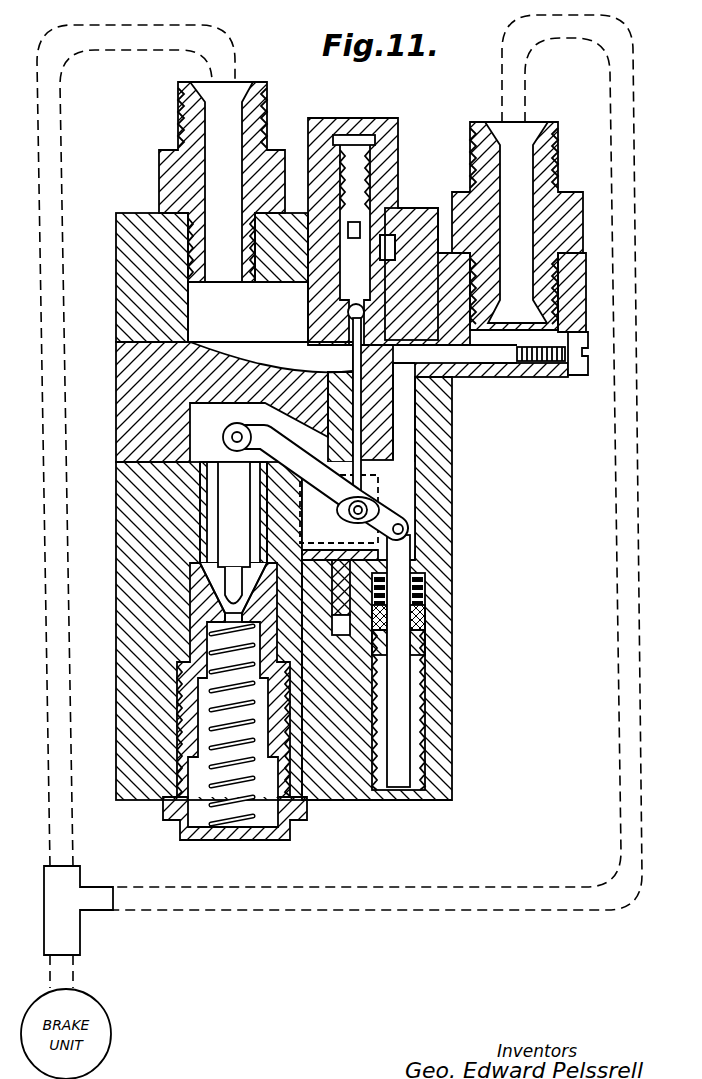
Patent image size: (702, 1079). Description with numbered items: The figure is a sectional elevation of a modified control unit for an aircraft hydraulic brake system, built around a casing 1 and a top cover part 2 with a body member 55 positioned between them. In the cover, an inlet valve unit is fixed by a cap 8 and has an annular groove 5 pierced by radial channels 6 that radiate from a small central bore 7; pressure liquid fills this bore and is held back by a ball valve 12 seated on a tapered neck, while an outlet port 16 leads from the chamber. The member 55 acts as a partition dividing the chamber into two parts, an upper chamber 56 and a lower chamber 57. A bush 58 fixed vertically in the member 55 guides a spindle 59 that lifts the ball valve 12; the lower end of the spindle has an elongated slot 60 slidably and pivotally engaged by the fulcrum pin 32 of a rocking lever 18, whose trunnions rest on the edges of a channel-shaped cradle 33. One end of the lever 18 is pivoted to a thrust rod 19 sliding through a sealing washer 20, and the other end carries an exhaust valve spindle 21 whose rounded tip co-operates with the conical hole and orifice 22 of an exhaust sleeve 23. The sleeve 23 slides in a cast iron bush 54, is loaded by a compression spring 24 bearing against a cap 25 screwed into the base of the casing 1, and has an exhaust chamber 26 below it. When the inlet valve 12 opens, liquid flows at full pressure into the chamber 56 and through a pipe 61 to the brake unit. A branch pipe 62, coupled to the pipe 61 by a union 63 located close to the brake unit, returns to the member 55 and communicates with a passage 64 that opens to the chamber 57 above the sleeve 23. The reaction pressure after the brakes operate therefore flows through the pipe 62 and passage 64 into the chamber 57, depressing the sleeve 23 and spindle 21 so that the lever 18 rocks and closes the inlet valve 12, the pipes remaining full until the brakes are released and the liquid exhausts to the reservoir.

The casing 1 is at (118, 665).
The top cover part 2 is at (118, 215).
The annular groove 5 is at (393, 240).
The radial channels 6 is at (397, 208).
The central bore 7 is at (348, 268).
The cap 8 is at (323, 114).
The ball valve 12 is at (346, 310).
The outlet port 16 is at (220, 122).
The rocking lever 18 is at (343, 510).
The thrust rod 19 is at (403, 707).
The sealing washer 20 is at (410, 612).
The exhaust valve spindle 21 is at (230, 492).
The orifice 22 is at (233, 613).
The sleeve 23 is at (197, 522).
The compression spring 24 is at (197, 745).
The cap 25 is at (178, 832).
The exhaust chamber 26 is at (215, 728).
The fulcrum pin 32 is at (395, 515).
The cradle 33 is at (306, 540).
The bush 54 is at (200, 578).
The body member 55 is at (118, 360).
The chamber part 56 is at (200, 297).
The chamber part 57 is at (200, 413).
The bush 58 is at (375, 430).
The spindle 59 is at (362, 472).
The elongated slot 60 is at (365, 506).
The pipe 61 is at (68, 737).
The branch pipe 62 is at (618, 660).
The union 63 is at (78, 900).
The passage 64 is at (405, 395).